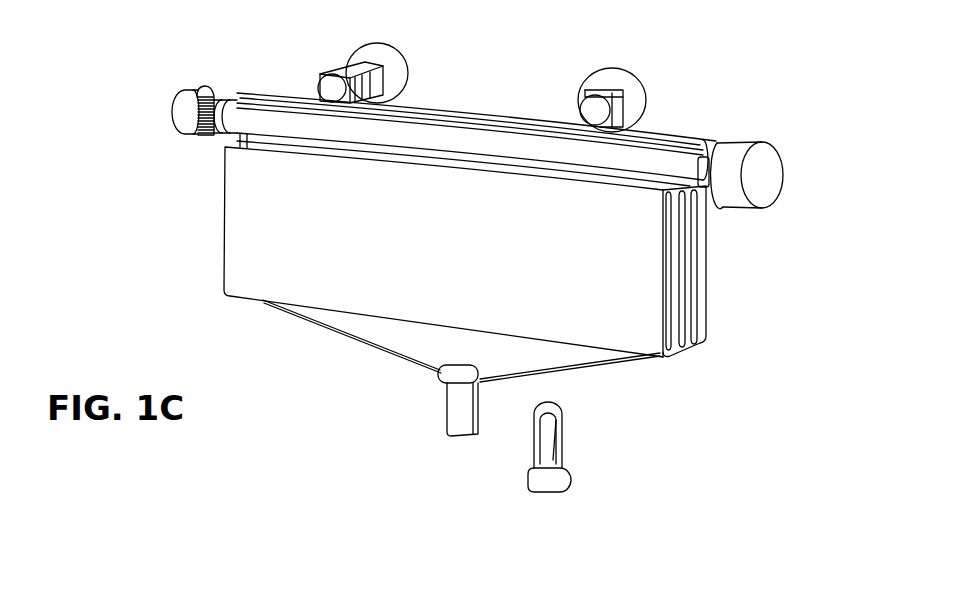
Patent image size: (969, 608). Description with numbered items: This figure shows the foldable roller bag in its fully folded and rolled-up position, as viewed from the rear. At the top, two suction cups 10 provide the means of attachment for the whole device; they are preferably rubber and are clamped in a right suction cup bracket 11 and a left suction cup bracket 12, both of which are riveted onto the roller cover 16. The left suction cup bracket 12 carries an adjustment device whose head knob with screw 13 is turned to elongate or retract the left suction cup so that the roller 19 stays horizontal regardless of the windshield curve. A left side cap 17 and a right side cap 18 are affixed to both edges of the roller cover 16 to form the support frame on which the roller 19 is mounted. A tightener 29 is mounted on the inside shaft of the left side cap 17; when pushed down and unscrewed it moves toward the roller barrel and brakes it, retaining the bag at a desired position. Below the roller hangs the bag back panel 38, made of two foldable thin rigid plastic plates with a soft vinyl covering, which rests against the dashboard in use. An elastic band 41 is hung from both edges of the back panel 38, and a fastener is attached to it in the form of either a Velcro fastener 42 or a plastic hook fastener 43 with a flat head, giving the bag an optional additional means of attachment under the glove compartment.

The suction cup 10 is at (400, 57).
The right suction cup bracket 11 is at (623, 102).
The left suction cup bracket 12 is at (348, 65).
The adjustment head knob with screw 13 is at (325, 88).
The roller cover 16 is at (670, 137).
The left side cap 17 is at (180, 102).
The right side cap 18 is at (773, 167).
The roller 19 is at (285, 125).
The tightener 29 is at (207, 100).
The bag back panel 38 is at (240, 223).
The elastic band 41 is at (368, 343).
The Velcro fastener 42 is at (457, 405).
The hook fastener 43 is at (538, 482).